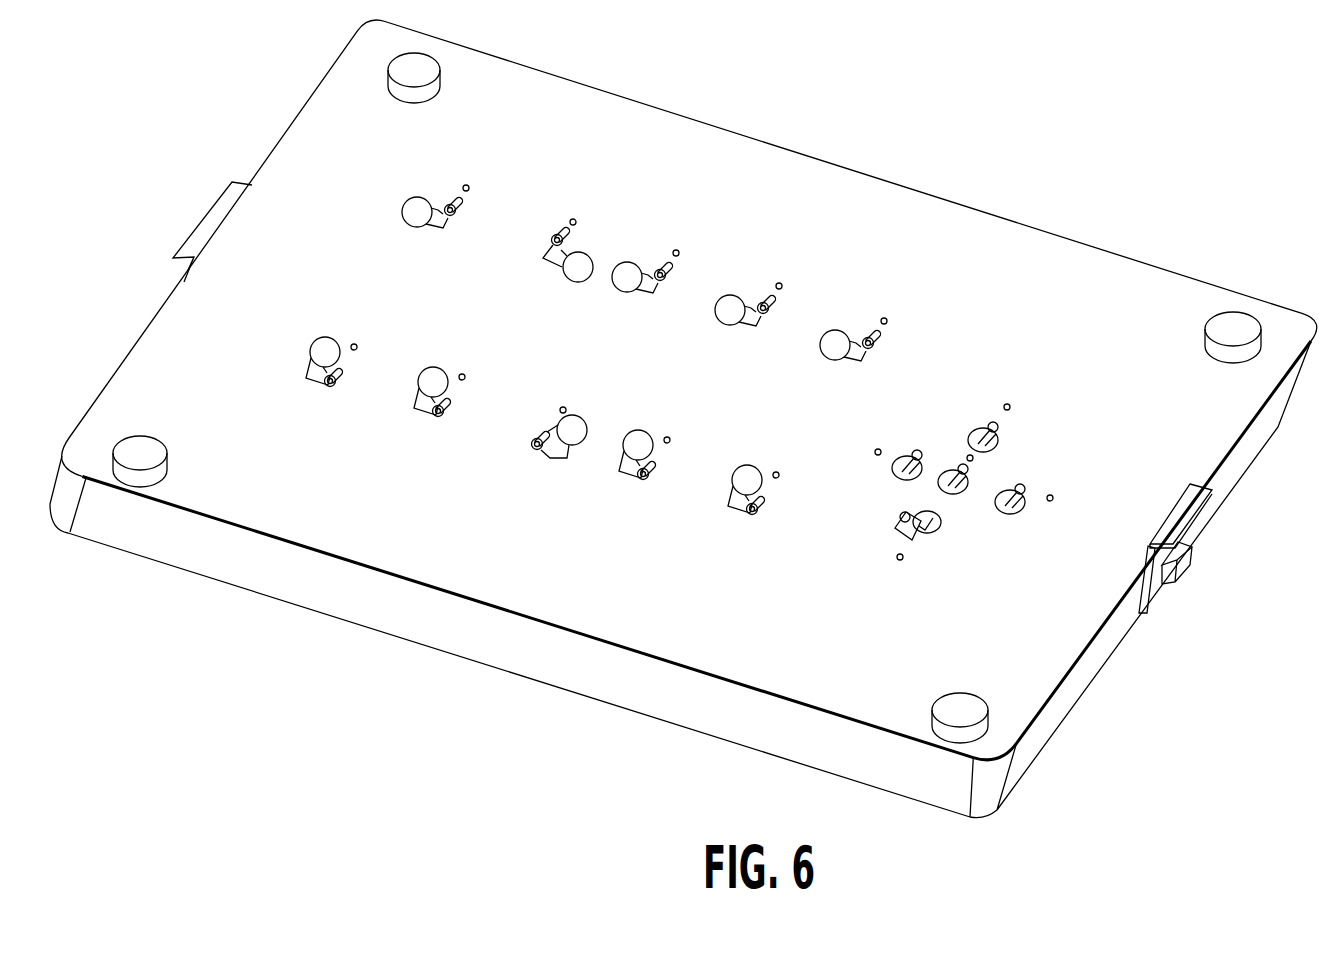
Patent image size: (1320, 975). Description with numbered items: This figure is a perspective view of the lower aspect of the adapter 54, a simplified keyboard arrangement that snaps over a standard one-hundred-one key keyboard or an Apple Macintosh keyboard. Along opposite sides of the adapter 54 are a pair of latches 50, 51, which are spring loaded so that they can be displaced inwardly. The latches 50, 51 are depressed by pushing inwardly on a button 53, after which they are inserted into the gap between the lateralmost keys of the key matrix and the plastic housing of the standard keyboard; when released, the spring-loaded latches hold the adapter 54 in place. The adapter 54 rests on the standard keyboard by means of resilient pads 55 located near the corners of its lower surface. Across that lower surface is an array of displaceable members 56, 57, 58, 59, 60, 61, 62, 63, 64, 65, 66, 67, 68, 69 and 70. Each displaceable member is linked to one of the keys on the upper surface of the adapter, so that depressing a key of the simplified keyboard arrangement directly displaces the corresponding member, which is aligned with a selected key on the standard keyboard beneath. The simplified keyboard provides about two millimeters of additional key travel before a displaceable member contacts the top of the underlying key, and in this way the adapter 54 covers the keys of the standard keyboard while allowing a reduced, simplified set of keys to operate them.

The latch 50 is at (197, 233).
The latch 51 is at (1217, 496).
The button 53 is at (1186, 565).
The adapter 54 is at (544, 140).
The resilient pads 55 is at (687, 398).
The displaceable member 56 is at (435, 190).
The displaceable member 57 is at (577, 247).
The displaceable member 58 is at (645, 258).
The displaceable member 59 is at (748, 290).
The displaceable member 60 is at (853, 324).
The displaceable member 61 is at (331, 342).
The displaceable member 62 is at (439, 375).
The displaceable member 63 is at (572, 416).
The displaceable member 64 is at (644, 436).
The displaceable member 65 is at (753, 472).
The displaceable member 66 is at (981, 422).
The displaceable member 67 is at (888, 476).
The displaceable member 68 is at (1024, 515).
The displaceable member 69 is at (926, 540).
The displaceable member 70 is at (961, 493).